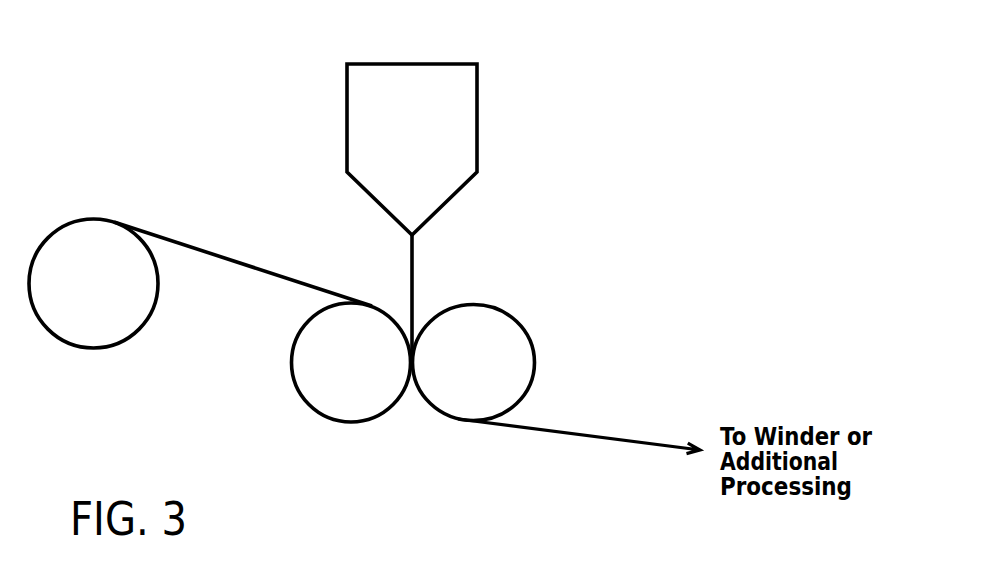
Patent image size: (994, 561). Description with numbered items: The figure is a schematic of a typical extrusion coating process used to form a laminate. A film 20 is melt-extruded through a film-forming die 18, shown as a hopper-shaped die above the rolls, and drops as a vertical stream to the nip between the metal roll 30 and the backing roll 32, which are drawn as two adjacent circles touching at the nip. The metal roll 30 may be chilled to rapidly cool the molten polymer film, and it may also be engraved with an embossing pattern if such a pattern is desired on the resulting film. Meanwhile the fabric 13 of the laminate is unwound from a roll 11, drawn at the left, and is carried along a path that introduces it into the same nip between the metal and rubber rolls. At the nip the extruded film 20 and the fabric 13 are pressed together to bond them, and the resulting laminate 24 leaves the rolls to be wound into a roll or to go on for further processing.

The roll 11 is at (81, 254).
The fabric 13 is at (232, 233).
The film-forming die 18 is at (438, 168).
The film 20 is at (422, 265).
The laminate 24 is at (569, 453).
The metal roll 30 is at (502, 337).
The backing roll 32 is at (332, 365).